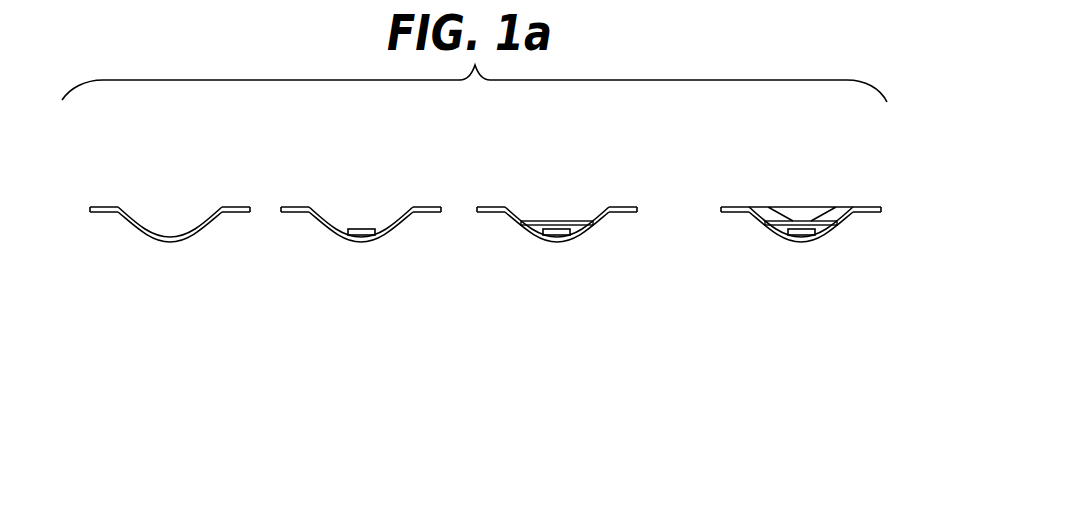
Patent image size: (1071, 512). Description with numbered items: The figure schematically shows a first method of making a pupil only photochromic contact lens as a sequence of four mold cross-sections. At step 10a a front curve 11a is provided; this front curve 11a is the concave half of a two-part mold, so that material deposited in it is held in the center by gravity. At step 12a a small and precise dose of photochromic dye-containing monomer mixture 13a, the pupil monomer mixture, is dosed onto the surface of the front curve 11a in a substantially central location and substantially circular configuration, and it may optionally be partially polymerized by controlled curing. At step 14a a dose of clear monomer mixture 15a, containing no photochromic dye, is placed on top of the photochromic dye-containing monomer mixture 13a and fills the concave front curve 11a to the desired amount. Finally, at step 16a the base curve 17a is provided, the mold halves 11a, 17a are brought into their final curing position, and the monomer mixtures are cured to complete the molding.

The step of providing the front curve 10a is at (137, 247).
The front curve 11a is at (118, 206).
The step of dosing photochromic monomer mixture 12a is at (333, 248).
The photochromic dye-containing monomer mixture 13a is at (363, 229).
The step of dosing clear monomer mixture 14a is at (535, 247).
The clear monomer mixture 15a is at (573, 221).
The step of providing the base curve and curing 16a is at (774, 247).
The base curve 17a is at (835, 213).